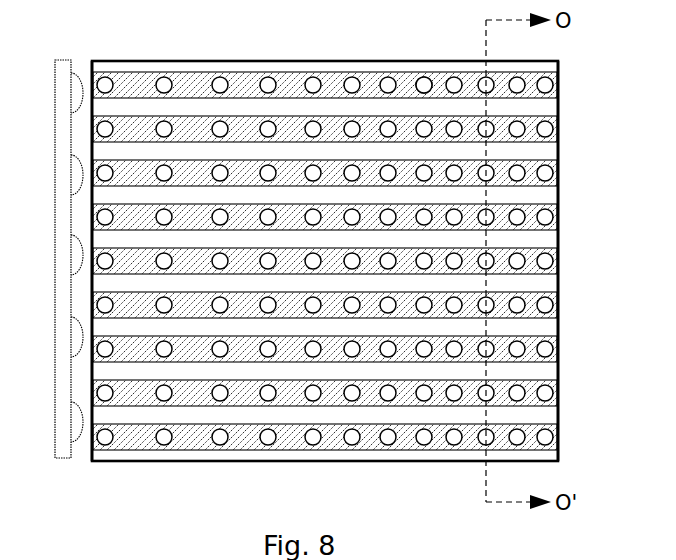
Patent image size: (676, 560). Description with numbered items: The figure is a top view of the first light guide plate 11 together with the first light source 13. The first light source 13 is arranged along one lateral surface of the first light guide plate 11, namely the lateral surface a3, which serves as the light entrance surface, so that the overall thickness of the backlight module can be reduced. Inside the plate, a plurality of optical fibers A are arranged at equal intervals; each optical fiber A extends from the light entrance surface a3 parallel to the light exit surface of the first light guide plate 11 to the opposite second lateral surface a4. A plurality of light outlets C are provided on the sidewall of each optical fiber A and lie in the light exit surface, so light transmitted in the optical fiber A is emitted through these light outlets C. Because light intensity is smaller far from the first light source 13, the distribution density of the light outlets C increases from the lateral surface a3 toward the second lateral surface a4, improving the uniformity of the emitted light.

The first light guide plate 11 is at (324, 232).
The first light source 13 is at (64, 362).
The optical fiber A is at (325, 63).
The light outlet C is at (424, 85).
The lateral surface a3 is at (92, 104).
The second lateral surface a4 is at (559, 110).